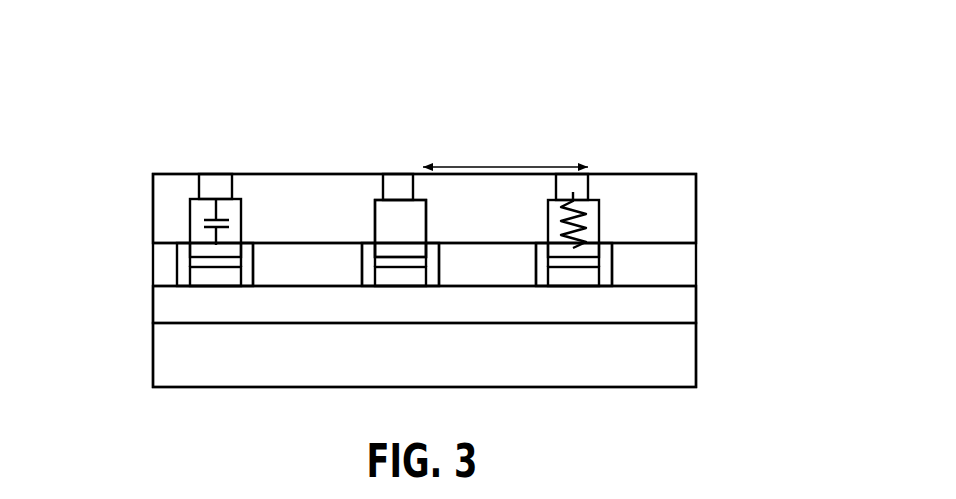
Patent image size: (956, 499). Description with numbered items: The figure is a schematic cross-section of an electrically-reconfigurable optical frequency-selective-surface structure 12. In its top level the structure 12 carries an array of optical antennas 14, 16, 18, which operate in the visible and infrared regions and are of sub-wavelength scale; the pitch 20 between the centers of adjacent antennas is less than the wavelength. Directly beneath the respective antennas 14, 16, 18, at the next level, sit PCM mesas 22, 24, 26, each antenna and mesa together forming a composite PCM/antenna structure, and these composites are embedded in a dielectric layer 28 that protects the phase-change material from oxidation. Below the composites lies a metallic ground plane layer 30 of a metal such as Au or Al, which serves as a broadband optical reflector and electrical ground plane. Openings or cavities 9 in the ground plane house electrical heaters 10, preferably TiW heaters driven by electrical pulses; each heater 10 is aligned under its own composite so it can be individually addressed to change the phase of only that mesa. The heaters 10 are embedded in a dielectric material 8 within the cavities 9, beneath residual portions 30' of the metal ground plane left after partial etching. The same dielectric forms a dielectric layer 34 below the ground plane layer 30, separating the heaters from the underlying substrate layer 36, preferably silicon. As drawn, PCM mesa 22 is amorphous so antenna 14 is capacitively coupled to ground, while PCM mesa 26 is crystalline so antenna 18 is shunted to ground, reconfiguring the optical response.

The electrically-reconfigurable optical frequency-selective-surface (O-FSS) structur 12 is at (687, 97).
The optical antenna 14 is at (215, 183).
The optical antenna 16 is at (402, 174).
The optical antenna 18 is at (578, 185).
The pitch 20 is at (503, 167).
The PCM mesa 22 is at (189, 223).
The PCM mesa 24 is at (383, 217).
The PCM mesa 26 is at (607, 220).
The dielectric layer 28 is at (165, 192).
The metallic ground plane layer 30 is at (458, 352).
The residual portions of the metal ground plane 30' is at (418, 199).
The dielectric material 8 is at (178, 261).
The openings or cavities 9 is at (258, 268).
The electrical heaters 10 is at (214, 281).
The dielectric layer 34 is at (677, 310).
The substrate layer 36 is at (648, 368).